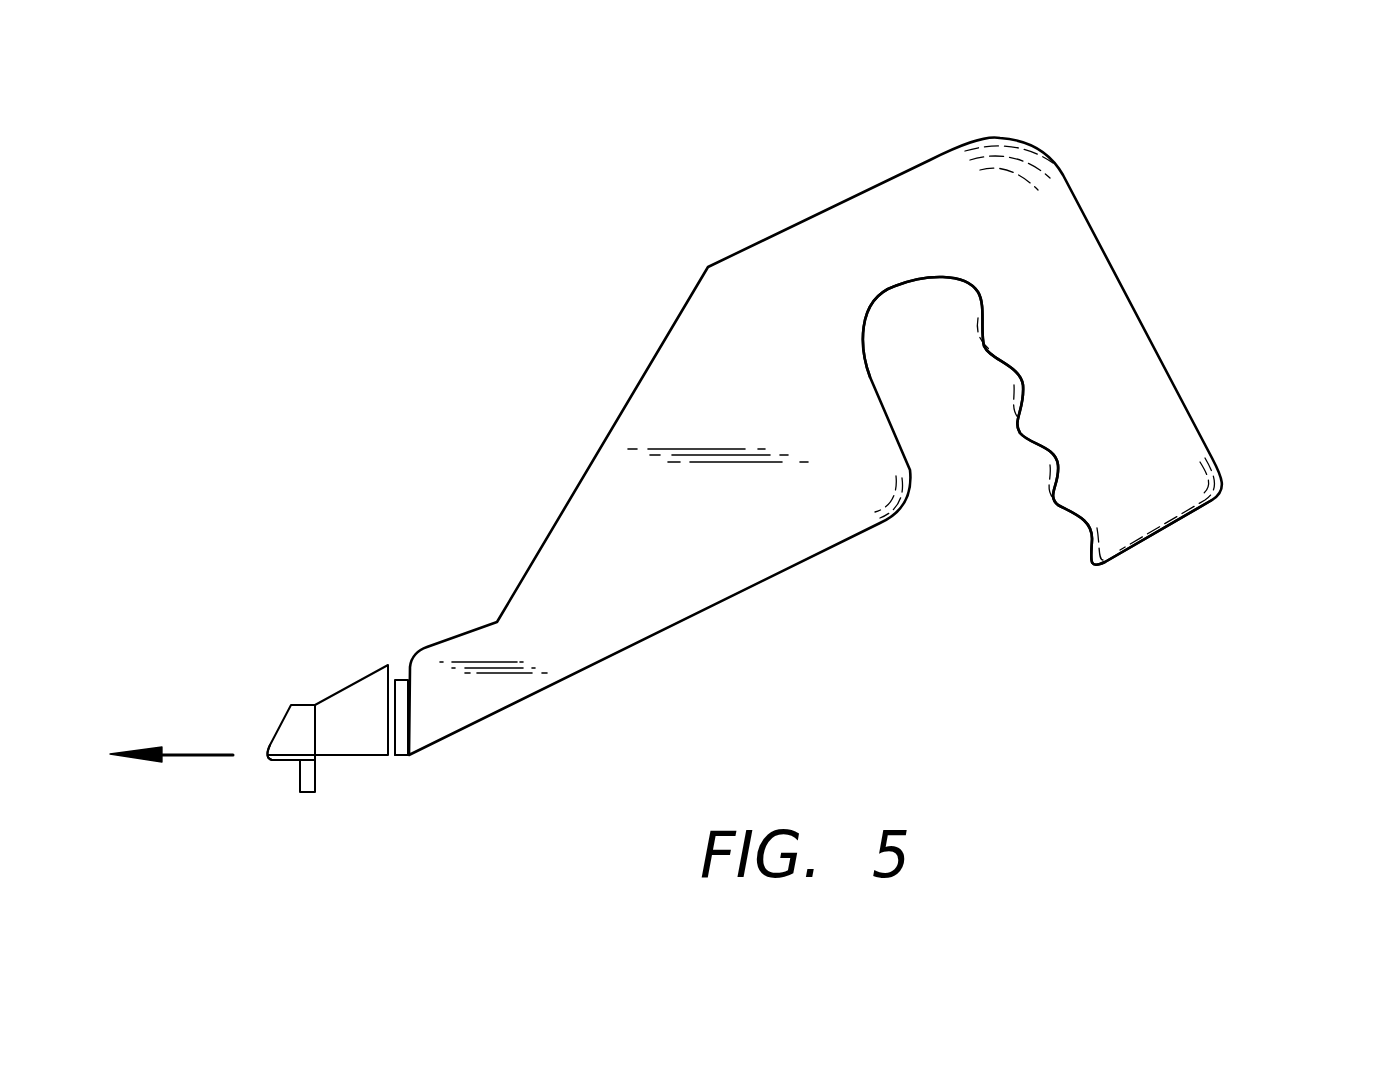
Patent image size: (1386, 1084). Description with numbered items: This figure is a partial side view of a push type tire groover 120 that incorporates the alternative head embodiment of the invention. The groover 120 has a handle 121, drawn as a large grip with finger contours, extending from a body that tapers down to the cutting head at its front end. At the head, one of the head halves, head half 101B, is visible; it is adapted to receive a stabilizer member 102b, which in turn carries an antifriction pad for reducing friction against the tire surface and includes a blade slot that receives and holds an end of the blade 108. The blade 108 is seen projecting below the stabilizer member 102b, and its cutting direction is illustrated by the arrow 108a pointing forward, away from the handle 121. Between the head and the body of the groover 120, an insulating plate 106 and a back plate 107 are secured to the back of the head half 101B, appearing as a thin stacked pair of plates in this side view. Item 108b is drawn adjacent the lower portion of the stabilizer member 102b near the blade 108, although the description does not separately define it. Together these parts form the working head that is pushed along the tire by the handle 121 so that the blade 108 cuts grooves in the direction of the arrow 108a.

The head half 101B is at (354, 696).
The stabilizer member 102b is at (288, 724).
The insulating plate 106 is at (393, 680).
The back plate 107 is at (403, 745).
The blade 108 is at (318, 778).
The arrow 108a is at (177, 753).
The tip bottom surface 108b is at (276, 758).
The push type tire groover 120 is at (1385, 395).
The handle 121 is at (1083, 300).